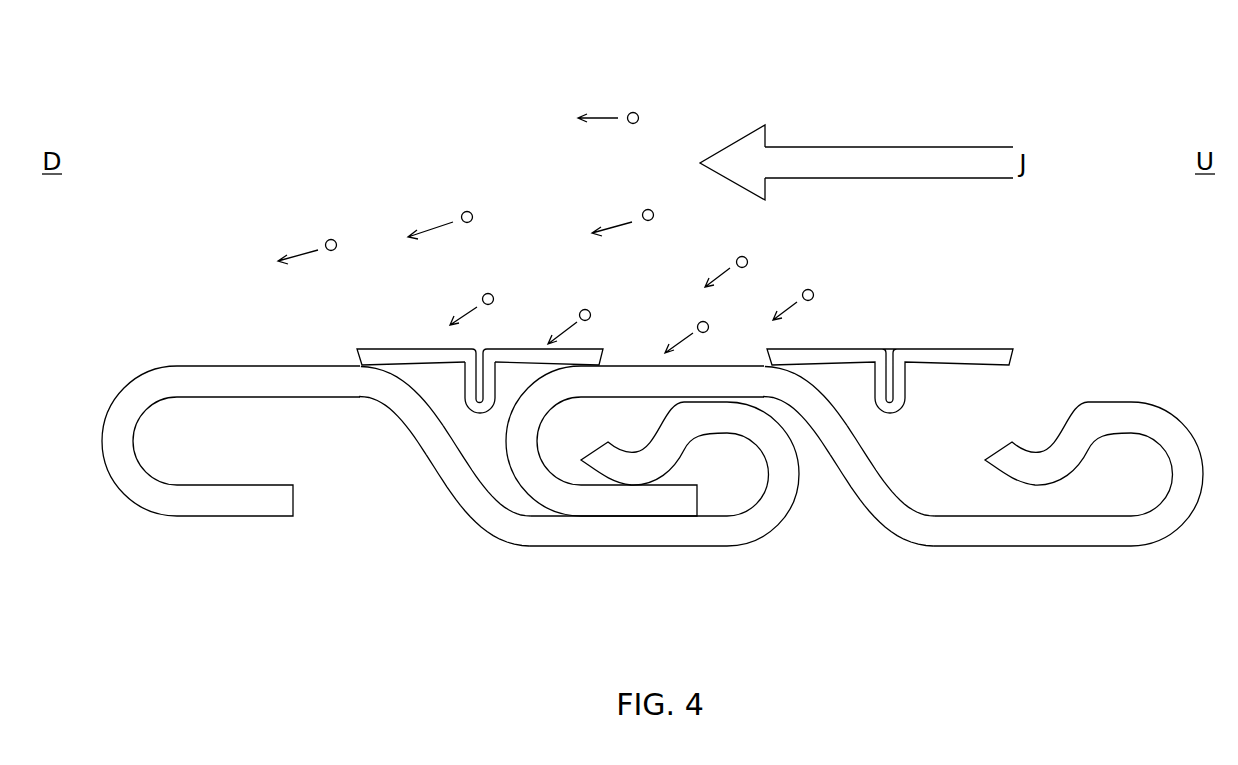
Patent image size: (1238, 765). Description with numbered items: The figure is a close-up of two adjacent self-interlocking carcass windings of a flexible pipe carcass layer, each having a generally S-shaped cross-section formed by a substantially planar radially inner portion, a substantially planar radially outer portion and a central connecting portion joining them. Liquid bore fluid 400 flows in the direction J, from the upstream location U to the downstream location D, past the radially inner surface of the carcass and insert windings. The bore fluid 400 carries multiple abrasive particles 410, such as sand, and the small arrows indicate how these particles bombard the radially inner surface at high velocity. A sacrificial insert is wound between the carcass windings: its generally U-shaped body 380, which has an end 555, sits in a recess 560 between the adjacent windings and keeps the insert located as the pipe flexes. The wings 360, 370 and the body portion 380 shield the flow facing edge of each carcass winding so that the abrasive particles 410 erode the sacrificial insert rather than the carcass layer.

The first wing portion 360 is at (415, 348).
The further wing portion 370 is at (970, 352).
The U-shaped body portion 380 is at (465, 387).
The liquid bore fluid 400 is at (857, 119).
The abrasive particles 410 is at (632, 112).
The end 555 is at (482, 417).
The recess 560 is at (500, 478).